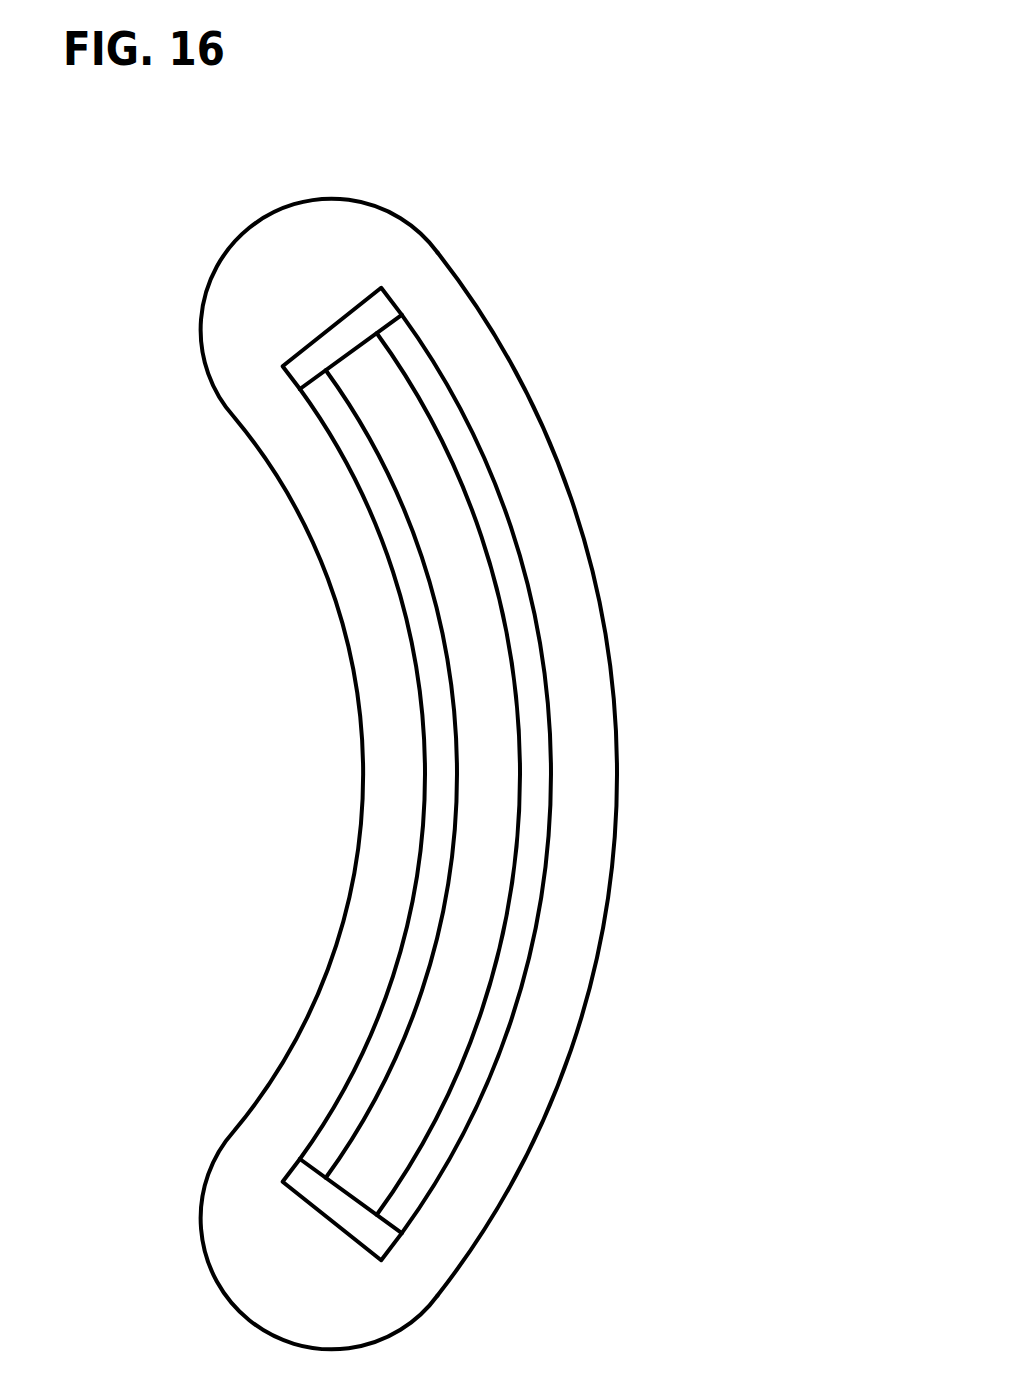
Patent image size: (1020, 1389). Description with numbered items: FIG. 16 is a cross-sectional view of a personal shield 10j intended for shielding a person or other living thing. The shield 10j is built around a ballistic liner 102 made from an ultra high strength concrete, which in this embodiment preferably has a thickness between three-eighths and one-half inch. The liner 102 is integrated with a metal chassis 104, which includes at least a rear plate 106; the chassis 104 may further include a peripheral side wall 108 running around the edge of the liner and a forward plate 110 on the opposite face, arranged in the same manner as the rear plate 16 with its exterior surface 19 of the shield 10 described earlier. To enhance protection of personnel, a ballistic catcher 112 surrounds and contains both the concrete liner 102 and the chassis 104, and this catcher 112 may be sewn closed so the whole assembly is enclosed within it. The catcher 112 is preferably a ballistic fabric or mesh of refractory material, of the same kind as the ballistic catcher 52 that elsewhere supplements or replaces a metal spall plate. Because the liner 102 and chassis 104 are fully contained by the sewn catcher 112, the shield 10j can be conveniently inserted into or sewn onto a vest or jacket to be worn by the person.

The shield 10j is at (193, 250).
The shield 10 is at (455, 1112).
The rear plate 16 is at (445, 710).
The exterior surface 19 is at (503, 565).
The ballistic catcher 52 is at (563, 953).
The ballistic liner 102 is at (407, 423).
The metal chassis 104 is at (433, 902).
The rear plate 106 is at (410, 638).
The peripheral side wall 108 is at (363, 1227).
The forward plate 110 is at (513, 1022).
The ballistic catcher 112 is at (580, 750).